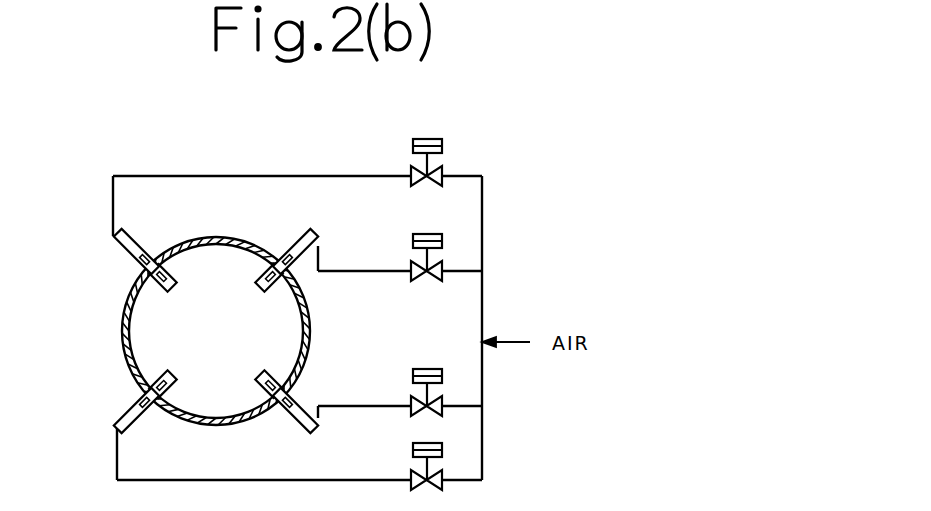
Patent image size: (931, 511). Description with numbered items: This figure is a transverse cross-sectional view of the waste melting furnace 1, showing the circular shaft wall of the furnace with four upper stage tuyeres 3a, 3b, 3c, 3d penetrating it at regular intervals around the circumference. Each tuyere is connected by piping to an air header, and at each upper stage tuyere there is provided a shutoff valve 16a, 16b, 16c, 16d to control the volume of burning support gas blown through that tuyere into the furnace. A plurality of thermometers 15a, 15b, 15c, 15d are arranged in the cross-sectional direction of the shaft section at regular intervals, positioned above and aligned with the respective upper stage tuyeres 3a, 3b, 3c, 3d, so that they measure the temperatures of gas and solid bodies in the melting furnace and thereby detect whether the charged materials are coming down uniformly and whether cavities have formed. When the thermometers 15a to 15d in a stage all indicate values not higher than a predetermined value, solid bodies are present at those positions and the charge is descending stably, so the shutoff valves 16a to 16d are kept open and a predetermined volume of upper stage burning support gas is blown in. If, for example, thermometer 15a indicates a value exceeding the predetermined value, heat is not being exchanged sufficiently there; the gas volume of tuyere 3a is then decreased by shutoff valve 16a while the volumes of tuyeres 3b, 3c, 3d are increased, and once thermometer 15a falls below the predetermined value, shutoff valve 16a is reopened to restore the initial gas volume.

The waste melting furnace 1 is at (217, 232).
The upper stage tuyere 3a is at (317, 237).
The upper stage tuyere 3b is at (305, 388).
The upper stage tuyere 3c is at (138, 430).
The upper stage tuyere 3d is at (128, 244).
The thermometer 15a is at (283, 257).
The thermometer 15b is at (287, 409).
The thermometer 15c is at (139, 395).
The thermometer 15d is at (139, 262).
The shutoff valve 16a is at (412, 268).
The shutoff valve 16b is at (415, 371).
The shutoff valve 16c is at (408, 474).
The shutoff valve 16d is at (428, 140).